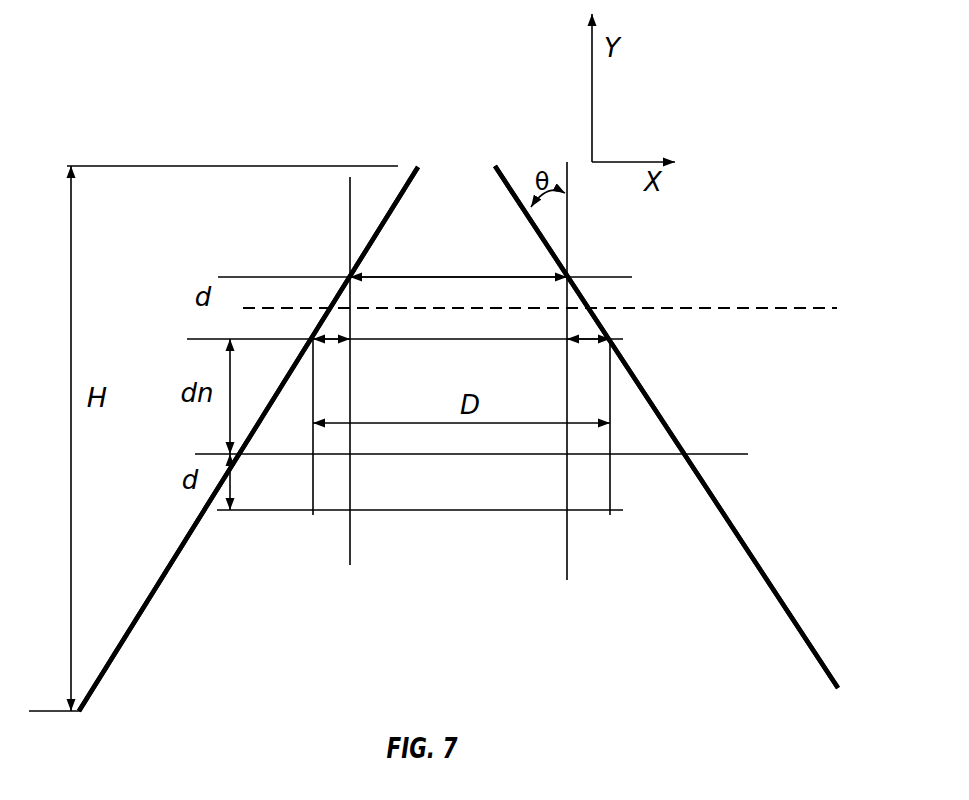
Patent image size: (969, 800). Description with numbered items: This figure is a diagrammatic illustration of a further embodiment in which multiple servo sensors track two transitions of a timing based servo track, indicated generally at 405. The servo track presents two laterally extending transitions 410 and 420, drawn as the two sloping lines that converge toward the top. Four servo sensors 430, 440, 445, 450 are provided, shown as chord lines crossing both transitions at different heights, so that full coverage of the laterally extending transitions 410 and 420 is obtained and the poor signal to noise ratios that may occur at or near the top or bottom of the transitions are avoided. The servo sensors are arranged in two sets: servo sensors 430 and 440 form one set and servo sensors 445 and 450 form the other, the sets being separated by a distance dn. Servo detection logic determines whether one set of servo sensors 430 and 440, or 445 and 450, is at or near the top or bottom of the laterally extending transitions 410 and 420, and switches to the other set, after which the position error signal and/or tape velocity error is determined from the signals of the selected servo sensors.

The light guide tip / tapered surfaces 405 is at (501, 183).
The laterally extending transition 410 is at (390, 181).
The laterally extending transition 420 is at (527, 228).
The servo sensor 430 is at (349, 274).
The servo sensor 440 is at (354, 344).
The servo sensor 445 is at (354, 459).
The servo sensor 450 is at (354, 515).